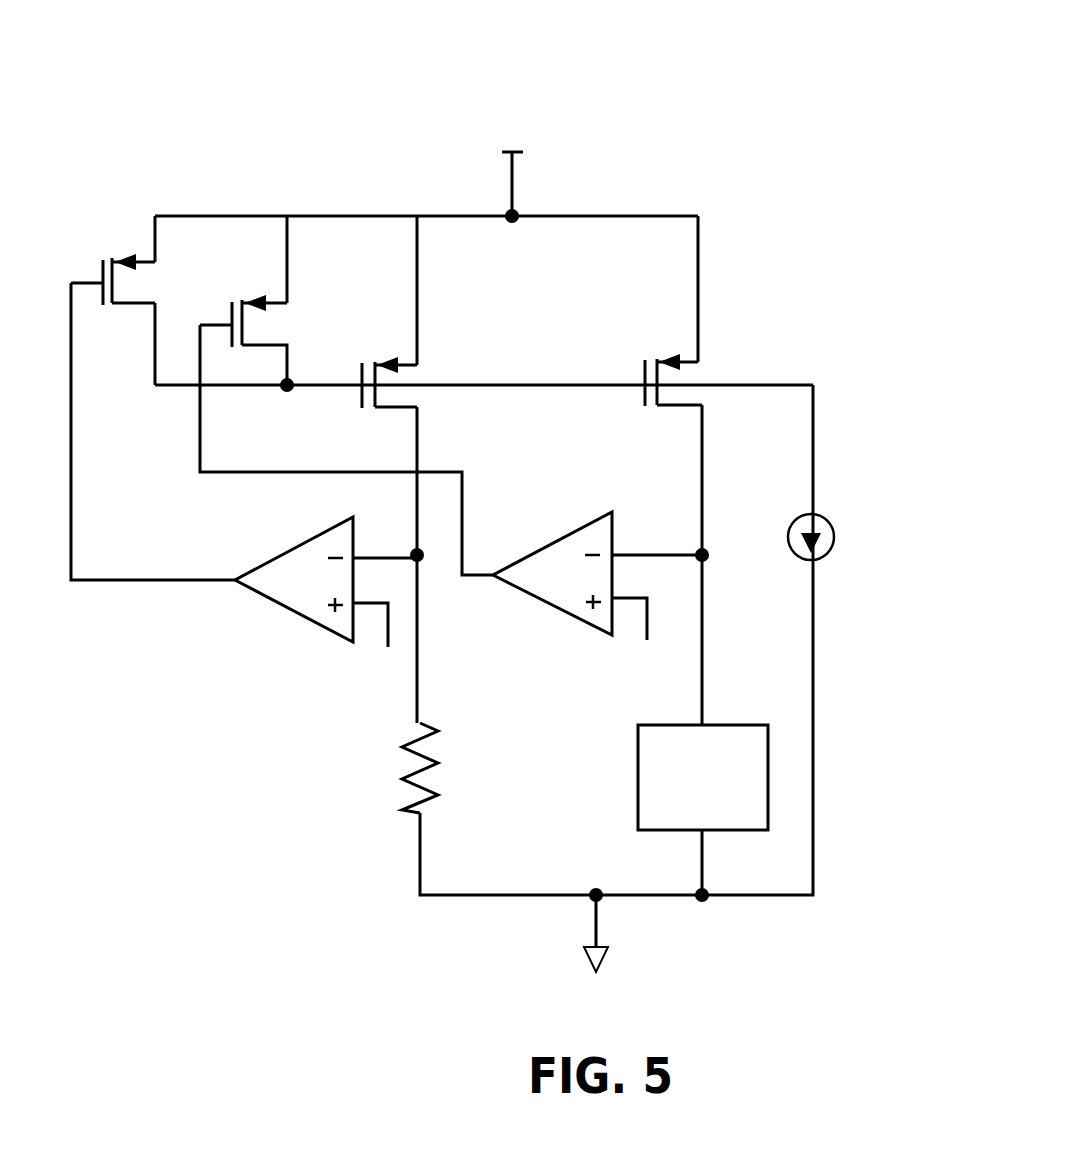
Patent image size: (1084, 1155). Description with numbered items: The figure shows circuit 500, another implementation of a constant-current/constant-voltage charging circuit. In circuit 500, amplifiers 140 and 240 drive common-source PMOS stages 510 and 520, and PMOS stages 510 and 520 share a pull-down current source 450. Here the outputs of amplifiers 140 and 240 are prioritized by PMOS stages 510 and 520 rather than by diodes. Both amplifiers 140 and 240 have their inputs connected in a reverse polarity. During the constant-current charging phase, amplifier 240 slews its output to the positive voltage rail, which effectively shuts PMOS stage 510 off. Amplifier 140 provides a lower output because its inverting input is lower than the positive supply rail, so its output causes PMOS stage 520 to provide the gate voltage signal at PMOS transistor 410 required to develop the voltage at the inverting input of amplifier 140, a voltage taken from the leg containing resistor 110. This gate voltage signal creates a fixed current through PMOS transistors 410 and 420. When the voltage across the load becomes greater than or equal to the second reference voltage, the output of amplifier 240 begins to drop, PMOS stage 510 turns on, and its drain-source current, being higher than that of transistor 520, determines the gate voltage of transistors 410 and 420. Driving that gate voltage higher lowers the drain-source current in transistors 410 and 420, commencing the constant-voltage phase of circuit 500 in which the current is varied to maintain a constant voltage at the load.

The circuit 500 is at (405, 95).
The PMOS stage 520 is at (102, 270).
The PMOS stage 510 is at (228, 309).
The PMOS transistor 410 is at (360, 373).
The PMOS transistor 420 is at (643, 371).
The amplifier 140 is at (258, 596).
The amplifier 240 is at (531, 554).
The resistor 110 is at (446, 772).
The pull-down current source 450 is at (836, 538).